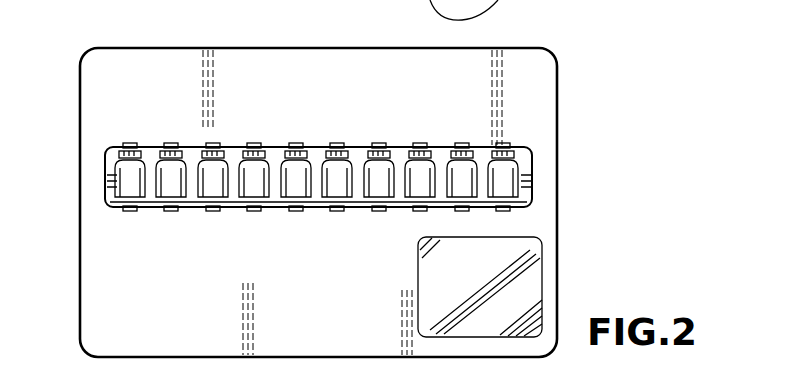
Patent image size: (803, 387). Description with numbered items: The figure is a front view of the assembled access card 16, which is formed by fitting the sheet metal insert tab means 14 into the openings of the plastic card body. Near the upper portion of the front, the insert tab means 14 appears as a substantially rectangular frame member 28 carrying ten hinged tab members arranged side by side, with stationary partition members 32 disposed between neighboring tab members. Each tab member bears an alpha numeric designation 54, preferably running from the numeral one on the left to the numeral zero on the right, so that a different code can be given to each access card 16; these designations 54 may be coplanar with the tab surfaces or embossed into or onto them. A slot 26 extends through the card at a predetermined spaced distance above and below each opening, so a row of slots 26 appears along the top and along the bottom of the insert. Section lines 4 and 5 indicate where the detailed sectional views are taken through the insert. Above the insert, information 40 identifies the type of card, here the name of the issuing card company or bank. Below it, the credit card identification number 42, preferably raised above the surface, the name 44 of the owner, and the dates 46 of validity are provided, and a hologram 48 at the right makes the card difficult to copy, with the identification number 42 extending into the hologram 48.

The section line 4- 4 is at (62, 168).
The section line 5- 5 is at (133, 90).
The insert tab means 14 is at (538, 160).
The access card 16 is at (572, 75).
The slot 26 is at (171, 143).
The frame member 28 is at (533, 178).
The stationary partition member 32 is at (533, 203).
The information 40 is at (298, 76).
The credit card identification number 42 is at (163, 281).
The name 44 is at (193, 333).
The dates 46 is at (318, 333).
The hologram 48 is at (526, 281).
The alpha numeric designations 54 is at (118, 158).